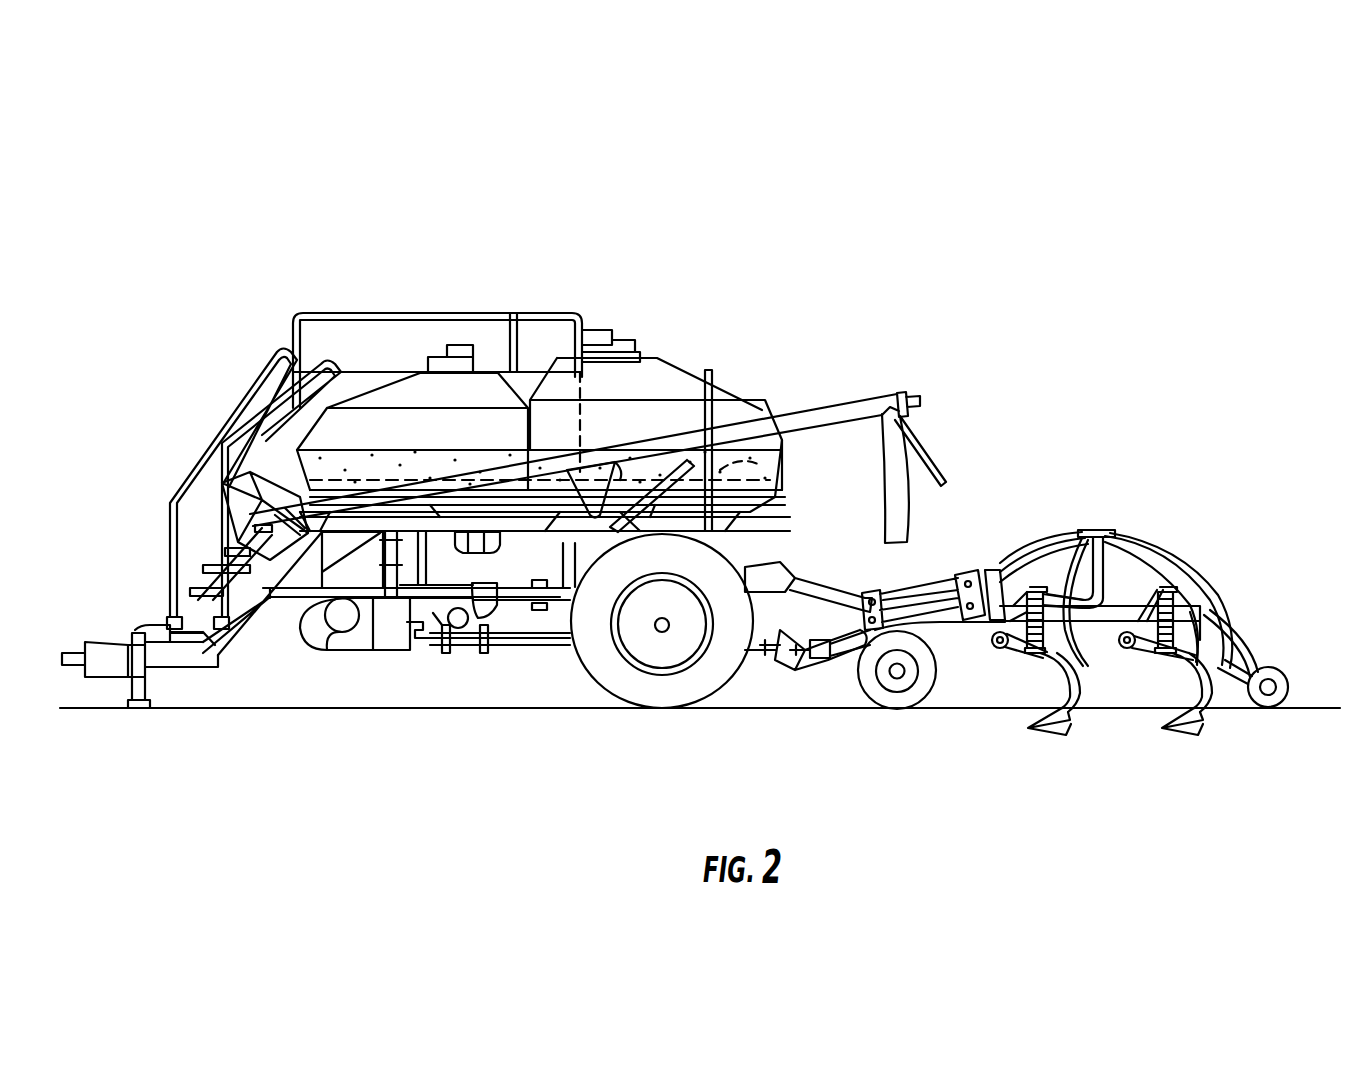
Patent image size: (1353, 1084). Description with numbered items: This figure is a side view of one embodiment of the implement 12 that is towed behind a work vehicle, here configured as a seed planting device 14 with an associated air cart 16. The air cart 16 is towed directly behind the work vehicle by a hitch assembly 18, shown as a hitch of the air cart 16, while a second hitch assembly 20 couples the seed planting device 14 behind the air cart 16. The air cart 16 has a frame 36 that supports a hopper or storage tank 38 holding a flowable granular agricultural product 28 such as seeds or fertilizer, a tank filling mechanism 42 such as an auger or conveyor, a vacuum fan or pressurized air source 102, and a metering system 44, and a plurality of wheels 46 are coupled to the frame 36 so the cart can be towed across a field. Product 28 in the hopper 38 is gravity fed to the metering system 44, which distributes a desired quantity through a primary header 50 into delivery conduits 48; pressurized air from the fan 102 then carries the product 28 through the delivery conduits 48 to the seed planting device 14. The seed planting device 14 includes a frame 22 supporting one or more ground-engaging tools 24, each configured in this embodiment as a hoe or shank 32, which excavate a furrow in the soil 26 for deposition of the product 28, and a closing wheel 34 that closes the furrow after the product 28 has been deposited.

The implement 12 is at (477, 217).
The seed planting device 14 is at (1122, 470).
The air cart 16 is at (188, 164).
The hitch assembly 18 is at (173, 652).
The hitch assembly 20 is at (833, 657).
The frame 22 is at (1097, 623).
The ground-engaging tool 24 is at (1046, 725).
The soil 26 is at (957, 712).
The agricultural product 28 is at (745, 460).
The hoe or shank 32 is at (1067, 714).
The closing wheel 34 is at (1267, 667).
The frame 36 is at (293, 602).
The hopper or storage tank 38 is at (425, 392).
The tank filling mechanism 42 is at (797, 410).
The metering system 44 is at (427, 678).
The wheels 46 is at (662, 692).
The delivery conduits 48 is at (814, 579).
The primary header 50 is at (463, 640).
The vacuum fan or pressurized air source 102 is at (327, 640).